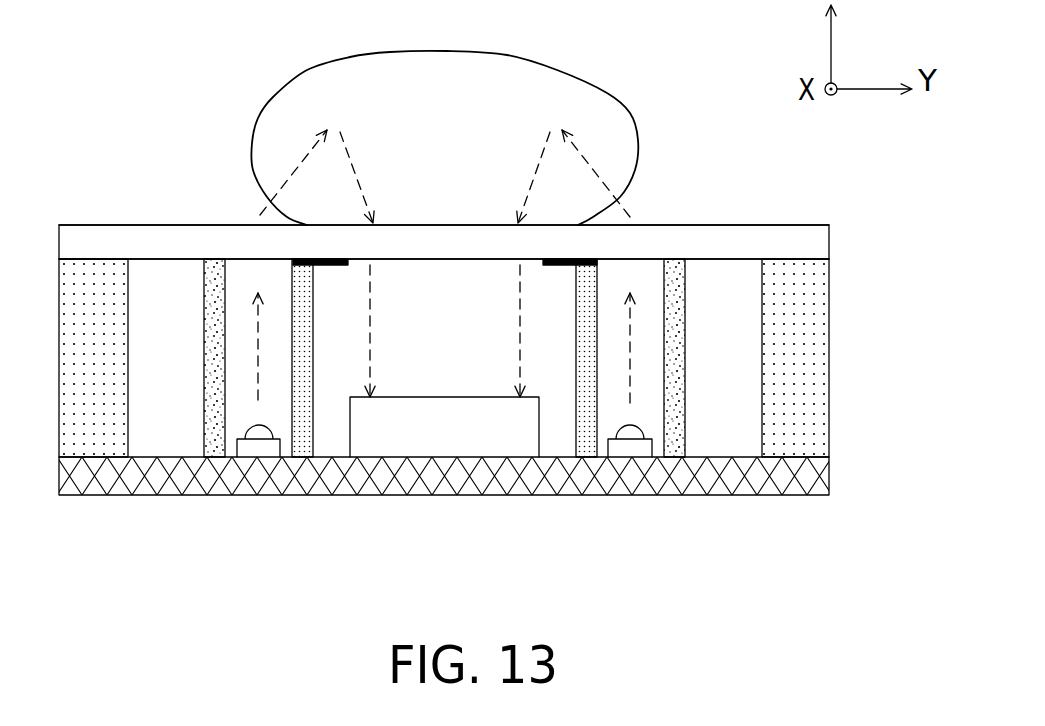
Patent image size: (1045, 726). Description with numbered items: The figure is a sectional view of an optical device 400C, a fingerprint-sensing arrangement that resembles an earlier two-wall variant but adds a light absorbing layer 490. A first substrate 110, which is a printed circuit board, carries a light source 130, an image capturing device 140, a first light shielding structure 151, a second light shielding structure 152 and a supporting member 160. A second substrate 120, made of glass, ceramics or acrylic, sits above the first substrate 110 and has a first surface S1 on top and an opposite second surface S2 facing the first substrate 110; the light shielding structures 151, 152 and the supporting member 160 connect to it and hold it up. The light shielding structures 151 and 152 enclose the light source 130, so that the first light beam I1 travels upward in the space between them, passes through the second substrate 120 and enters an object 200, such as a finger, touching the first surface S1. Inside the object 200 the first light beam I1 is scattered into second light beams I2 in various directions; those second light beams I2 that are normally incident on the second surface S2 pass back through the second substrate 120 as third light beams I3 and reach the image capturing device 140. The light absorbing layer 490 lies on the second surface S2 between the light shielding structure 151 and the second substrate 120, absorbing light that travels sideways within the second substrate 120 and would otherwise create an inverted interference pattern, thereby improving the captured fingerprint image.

The optical device 400C is at (119, 126).
The first surface S1 is at (152, 216).
The second surface S2 is at (171, 271).
The object 200 is at (640, 139).
The light absorbing layer 490 is at (597, 262).
The second substrate 120 is at (815, 241).
The first substrate 110 is at (815, 478).
The supporting member 160 is at (101, 442).
The image capturing device 140 is at (432, 442).
The light shielding structure 151 is at (586, 452).
The light source 130 is at (628, 452).
The light shielding structure 152 is at (676, 452).
The first light beam I1 is at (632, 337).
The second light beams I2 is at (540, 162).
The third light beams I3 is at (520, 330).